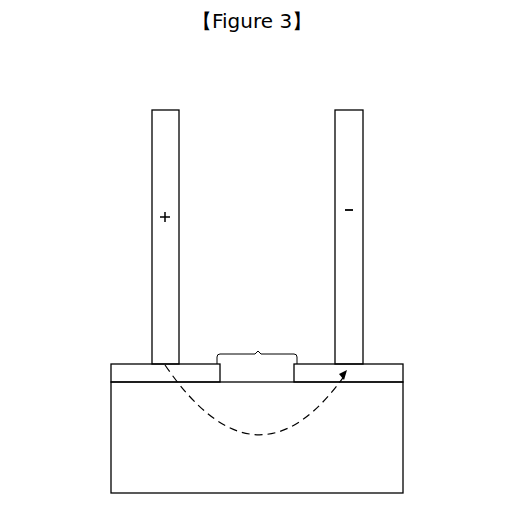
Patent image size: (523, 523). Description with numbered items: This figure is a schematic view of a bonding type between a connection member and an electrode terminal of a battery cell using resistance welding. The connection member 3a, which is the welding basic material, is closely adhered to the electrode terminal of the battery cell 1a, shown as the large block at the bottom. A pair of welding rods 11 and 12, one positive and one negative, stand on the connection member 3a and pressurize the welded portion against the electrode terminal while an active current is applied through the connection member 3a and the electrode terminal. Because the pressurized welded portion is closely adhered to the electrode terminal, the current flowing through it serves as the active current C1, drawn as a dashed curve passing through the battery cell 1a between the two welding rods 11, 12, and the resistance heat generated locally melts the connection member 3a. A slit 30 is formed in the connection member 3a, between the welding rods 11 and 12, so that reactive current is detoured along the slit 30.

The battery cell 1a is at (113, 458).
The connection member 3a is at (113, 373).
The welding rod 11 is at (152, 124).
The welding rod 12 is at (360, 133).
The slit 30 is at (257, 345).
The active current C1 is at (256, 415).